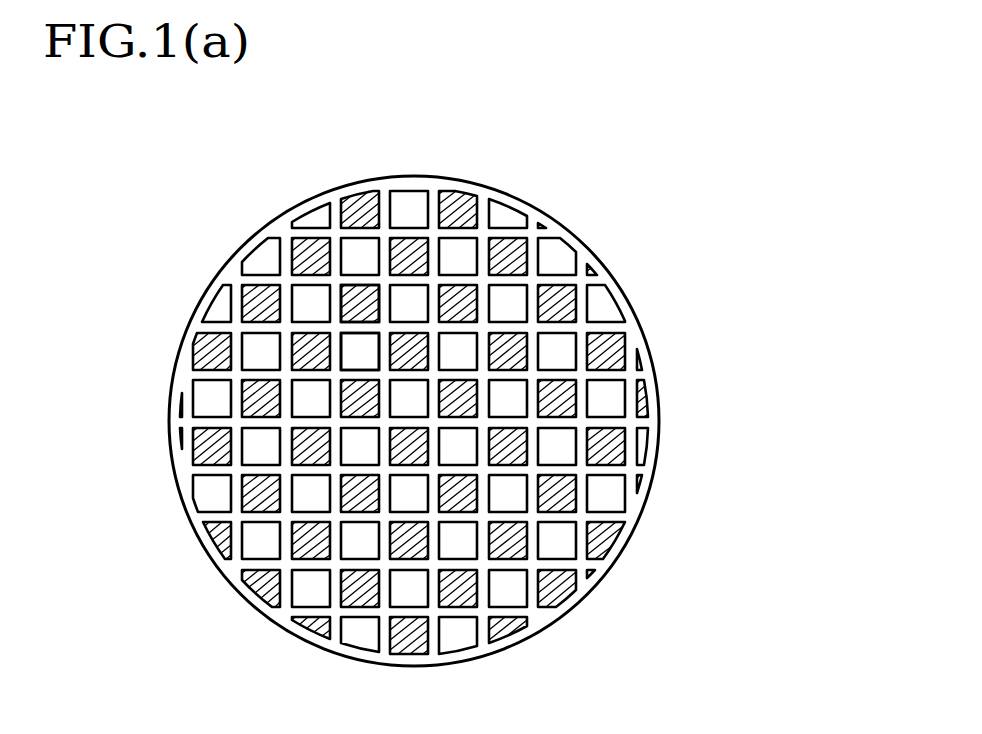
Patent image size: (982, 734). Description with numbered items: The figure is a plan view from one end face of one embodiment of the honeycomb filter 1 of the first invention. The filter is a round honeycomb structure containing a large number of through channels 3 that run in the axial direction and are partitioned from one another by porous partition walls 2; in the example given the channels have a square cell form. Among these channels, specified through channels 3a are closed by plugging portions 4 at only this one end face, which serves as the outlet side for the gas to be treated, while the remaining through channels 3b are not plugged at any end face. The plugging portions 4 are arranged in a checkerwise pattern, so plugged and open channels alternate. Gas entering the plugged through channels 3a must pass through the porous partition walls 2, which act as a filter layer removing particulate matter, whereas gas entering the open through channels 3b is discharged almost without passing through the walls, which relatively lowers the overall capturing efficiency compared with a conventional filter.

The honeycomb filter 1 is at (613, 218).
The porous partition walls 2 is at (460, 282).
The through channels 3 is at (213, 335).
The plugged through channels 3a is at (360, 312).
The unplugged through channels 3b is at (358, 353).
The plugging portions 4 is at (360, 312).